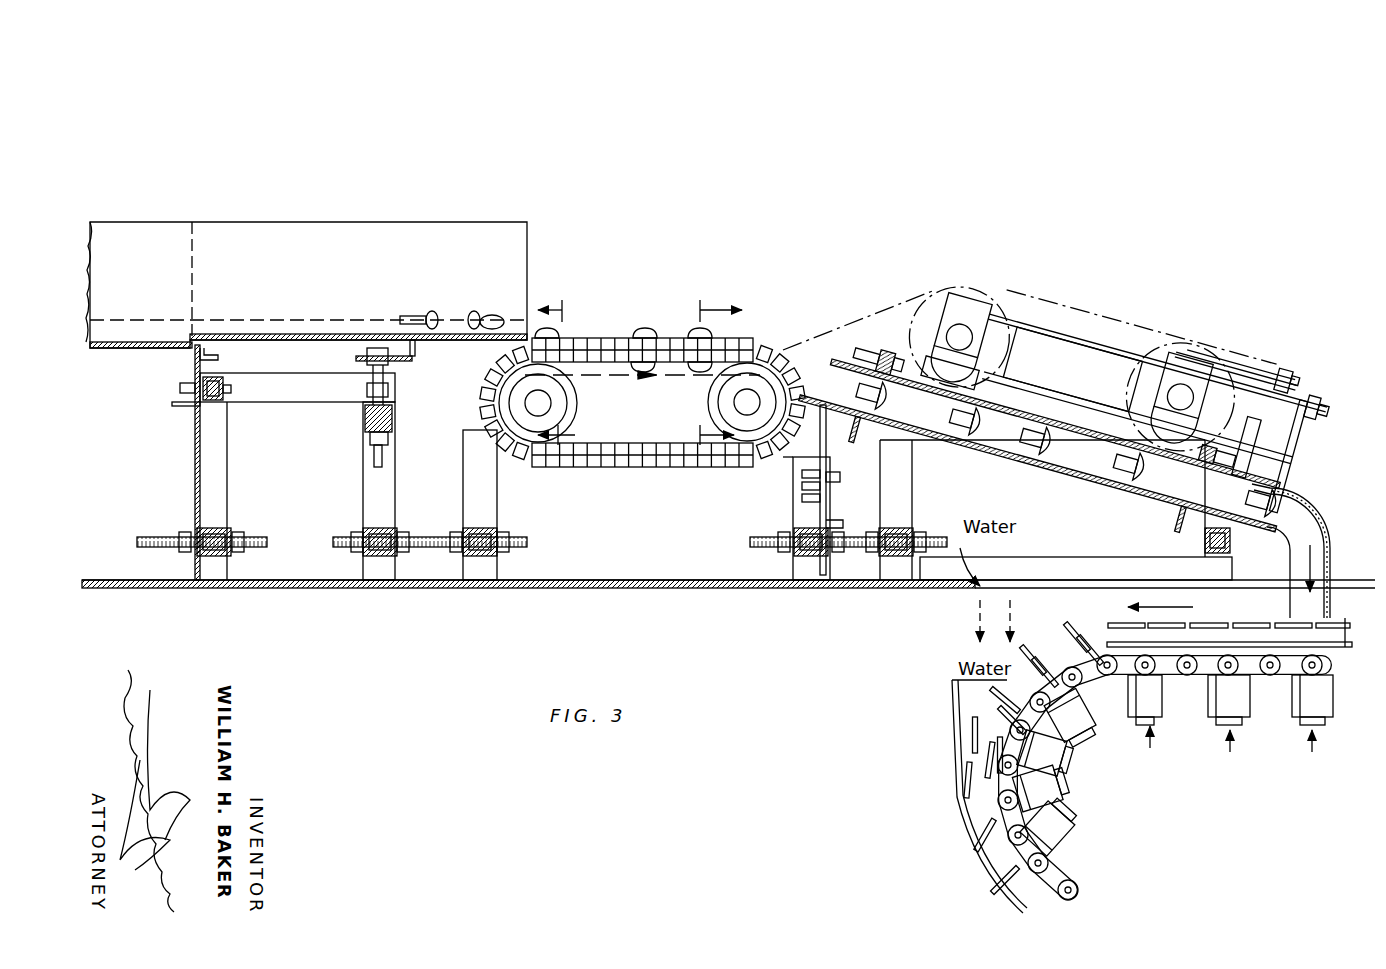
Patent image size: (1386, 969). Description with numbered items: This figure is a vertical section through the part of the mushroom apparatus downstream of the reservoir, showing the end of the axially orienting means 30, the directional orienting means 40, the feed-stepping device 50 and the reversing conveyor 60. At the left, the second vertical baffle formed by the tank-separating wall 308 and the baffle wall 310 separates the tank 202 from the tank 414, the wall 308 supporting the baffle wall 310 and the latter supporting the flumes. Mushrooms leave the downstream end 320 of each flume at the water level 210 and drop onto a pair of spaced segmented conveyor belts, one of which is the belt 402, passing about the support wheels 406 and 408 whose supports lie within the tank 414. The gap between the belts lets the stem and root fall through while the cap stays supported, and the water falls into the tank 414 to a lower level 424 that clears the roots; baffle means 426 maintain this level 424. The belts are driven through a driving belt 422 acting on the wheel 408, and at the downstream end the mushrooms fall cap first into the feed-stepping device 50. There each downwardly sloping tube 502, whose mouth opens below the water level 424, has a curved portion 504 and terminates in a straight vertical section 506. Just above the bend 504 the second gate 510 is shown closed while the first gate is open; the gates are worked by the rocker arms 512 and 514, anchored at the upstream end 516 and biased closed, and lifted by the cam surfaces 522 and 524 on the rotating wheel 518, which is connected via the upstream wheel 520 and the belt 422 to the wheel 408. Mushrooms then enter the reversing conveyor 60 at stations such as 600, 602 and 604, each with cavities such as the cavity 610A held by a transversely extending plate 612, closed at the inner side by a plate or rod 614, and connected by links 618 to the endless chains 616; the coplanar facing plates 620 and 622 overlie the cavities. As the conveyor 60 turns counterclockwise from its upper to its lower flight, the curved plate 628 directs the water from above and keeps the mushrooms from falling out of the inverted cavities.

The axially orienting means 30 is at (341, 246).
The directional orienting means 40 is at (677, 369).
The feed-stepping device 50 is at (1092, 402).
The reversing conveyor 60 is at (1121, 749).
The tank 202 is at (150, 580).
The water level 210 is at (125, 307).
The tank-separating wall 308 is at (195, 440).
The baffle wall 310 is at (188, 262).
The downstream end of the flumes 320 is at (532, 266).
The segmented conveyor belt 402 is at (638, 462).
The support wheel 406 is at (515, 412).
The support wheel 408 is at (753, 420).
The tank 414 is at (498, 590).
The driving belt 422 is at (846, 323).
The water level 424 is at (590, 380).
The baffle means 426 is at (832, 443).
The downwardly sloping tube 502 is at (1047, 465).
The curved portion 504 is at (1320, 505).
The straight vertical section 506 is at (1332, 557).
The second gate 510 is at (1298, 462).
The rocker arm 512 is at (1230, 400).
The rocker arm 514 is at (1243, 372).
The anchored end 516 is at (968, 312).
The rotating wheel 518 is at (1185, 343).
The upstream wheel 520 is at (985, 302).
The cam surface 522 is at (1210, 360).
The cam surface 524 is at (1165, 478).
The station 600 is at (1320, 753).
The station 602 is at (1239, 753).
The station 604 is at (1157, 746).
The mushroom-receiving cavity 610A is at (1218, 697).
The transversely extending plate 612 is at (987, 760).
The transversely extending plate or rod 614 is at (1070, 788).
The endless chain 616 is at (1007, 807).
The link 618 is at (997, 735).
The facing plate 620 is at (1335, 632).
The facing plate 622 is at (1030, 655).
The curved plate 628 is at (951, 690).